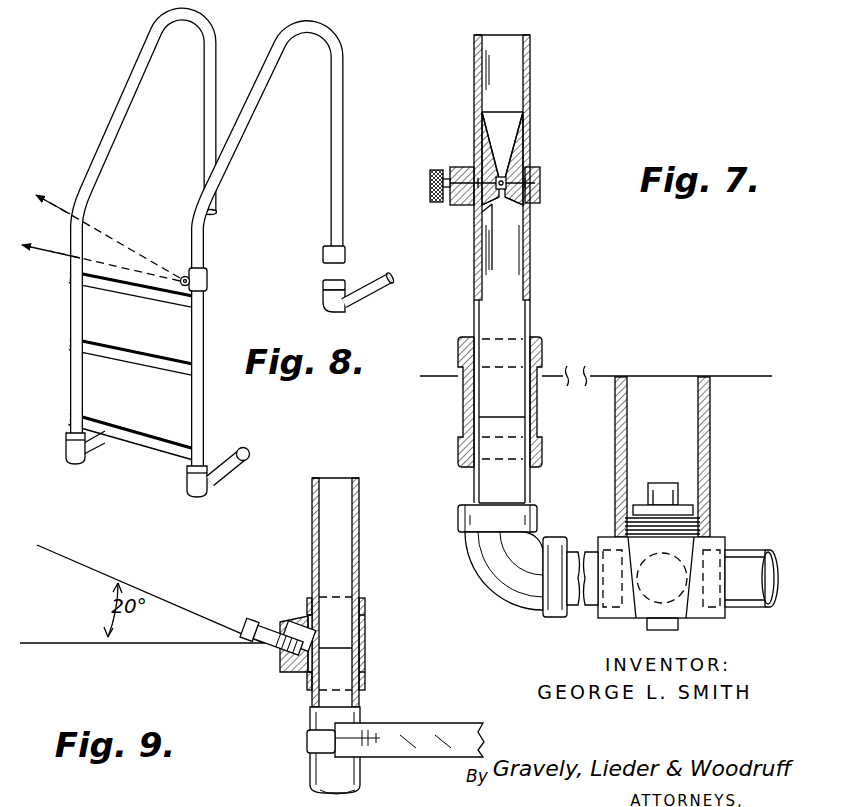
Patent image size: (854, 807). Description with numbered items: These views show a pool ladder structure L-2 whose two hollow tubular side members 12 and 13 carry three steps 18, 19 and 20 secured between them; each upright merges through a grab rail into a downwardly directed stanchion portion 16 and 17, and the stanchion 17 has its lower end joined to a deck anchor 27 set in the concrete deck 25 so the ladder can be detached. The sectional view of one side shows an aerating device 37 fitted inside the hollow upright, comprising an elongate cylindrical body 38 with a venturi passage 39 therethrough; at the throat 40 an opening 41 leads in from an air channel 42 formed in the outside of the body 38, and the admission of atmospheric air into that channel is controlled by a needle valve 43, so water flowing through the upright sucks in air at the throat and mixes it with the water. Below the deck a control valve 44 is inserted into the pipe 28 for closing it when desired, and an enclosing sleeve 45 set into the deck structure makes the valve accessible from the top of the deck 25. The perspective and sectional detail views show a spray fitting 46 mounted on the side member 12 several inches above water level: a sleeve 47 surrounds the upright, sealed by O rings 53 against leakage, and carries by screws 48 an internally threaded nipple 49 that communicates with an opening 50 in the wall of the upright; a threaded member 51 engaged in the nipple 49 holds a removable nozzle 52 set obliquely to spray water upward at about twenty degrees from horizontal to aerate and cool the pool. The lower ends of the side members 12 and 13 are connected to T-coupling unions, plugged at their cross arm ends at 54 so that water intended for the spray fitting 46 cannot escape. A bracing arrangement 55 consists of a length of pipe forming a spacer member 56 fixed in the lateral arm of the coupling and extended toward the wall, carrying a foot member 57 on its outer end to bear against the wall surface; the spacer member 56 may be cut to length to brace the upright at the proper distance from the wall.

In FIG. 8, the ladder structure L-2 is at (306, 247).
In FIG. 8, the side member 12 is at (268, 247).
In FIG. 9, the side member 12 is at (359, 513).
In FIG. 8, the side member 13 is at (119, 224).
In FIG. 8, the stanchion portion 16 is at (205, 140).
In FIG. 8, the stanchion portion 17 is at (330, 172).
In FIG. 7, the stanchion portion 17 is at (530, 62).
In FIG. 8, the step 18 is at (113, 288).
In FIG. 8, the step 19 is at (119, 362).
In FIG. 8, the step 20 is at (127, 446).
In FIG. 7, the deck 25 is at (736, 380).
In FIG. 8, the deck anchor 27 is at (346, 253).
In FIG. 7, the deck anchor 27 is at (541, 343).
In FIG. 8, the pipe 28 is at (362, 298).
In FIG. 7, the pipe 28 is at (527, 492).
In FIG. 7, the aerating device 37 is at (536, 147).
In FIG. 7, the cylindrical body 38 is at (481, 145).
In FIG. 7, the venturi passage 39 is at (510, 124).
In FIG. 7, the throat 40 is at (500, 168).
In FIG. 7, the opening 41 is at (511, 207).
In FIG. 7, the air channel 42 is at (541, 183).
In FIG. 7, the needle valve 43 is at (430, 184).
In FIG. 7, the control valve 44 is at (663, 483).
In FIG. 7, the enclosing sleeve 45 is at (627, 378).
In FIG. 8, the spray fitting 46 is at (212, 273).
In FIG. 9, the spray fitting 46 is at (364, 630).
In FIG. 9, the sleeve 47 is at (371, 630).
In FIG. 9, the screws 48 is at (307, 689).
In FIG. 9, the nipple 49 is at (272, 635).
In FIG. 9, the opening 50 is at (321, 649).
In FIG. 9, the threaded member 51 is at (303, 627).
In FIG. 9, the nozzle 52 is at (253, 619).
In FIG. 8, the O rings 53 is at (66, 446).
In FIG. 9, the O rings 53 is at (366, 611).
In FIG. 8, the plug location 54 is at (100, 456).
In FIG. 8, the bracing arrangement 55 is at (260, 458).
In FIG. 8, the spacer member 56 is at (226, 473).
In FIG. 8, the foot member 57 is at (248, 451).